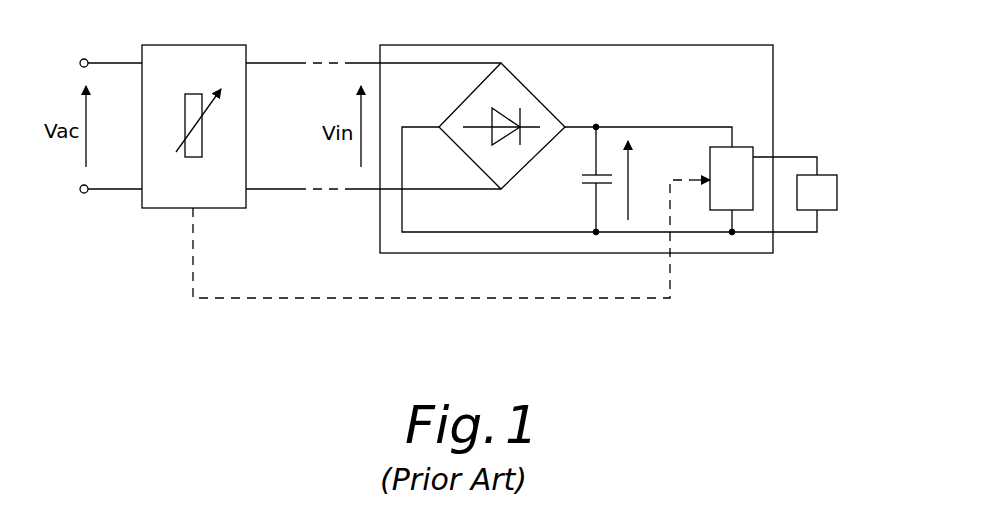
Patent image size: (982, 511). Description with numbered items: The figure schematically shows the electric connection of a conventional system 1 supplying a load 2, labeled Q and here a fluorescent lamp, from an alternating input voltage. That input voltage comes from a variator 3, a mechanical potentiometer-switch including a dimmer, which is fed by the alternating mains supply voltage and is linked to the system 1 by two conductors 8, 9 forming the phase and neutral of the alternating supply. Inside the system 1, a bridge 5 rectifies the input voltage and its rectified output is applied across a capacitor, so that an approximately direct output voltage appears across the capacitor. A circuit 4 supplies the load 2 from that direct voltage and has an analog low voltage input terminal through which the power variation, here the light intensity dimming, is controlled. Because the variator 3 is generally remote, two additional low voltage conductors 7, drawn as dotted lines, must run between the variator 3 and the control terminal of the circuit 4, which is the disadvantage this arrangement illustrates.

The system 1 is at (675, 45).
The load 2 is at (824, 175).
The variator 3 is at (192, 45).
The circuit 4 is at (744, 147).
The bridge 5 is at (532, 93).
The low voltage conductors 7 is at (237, 298).
The conductor 8 is at (272, 63).
The conductor 9 is at (270, 189).